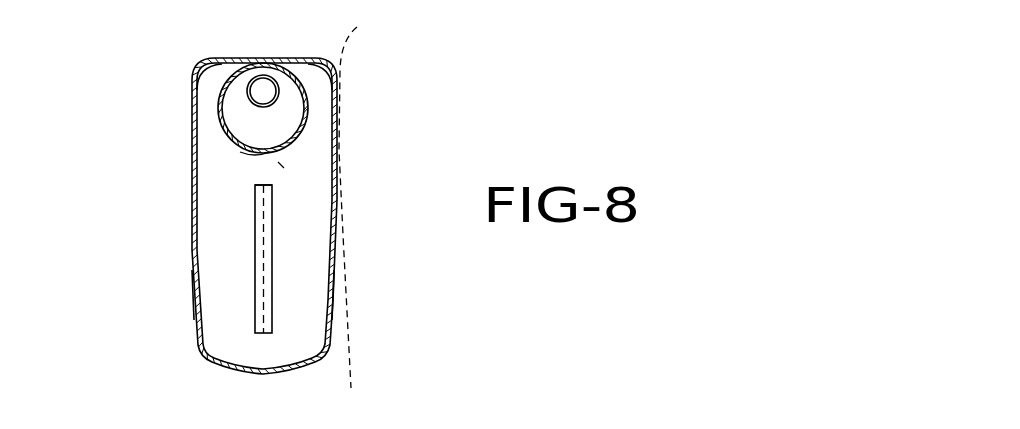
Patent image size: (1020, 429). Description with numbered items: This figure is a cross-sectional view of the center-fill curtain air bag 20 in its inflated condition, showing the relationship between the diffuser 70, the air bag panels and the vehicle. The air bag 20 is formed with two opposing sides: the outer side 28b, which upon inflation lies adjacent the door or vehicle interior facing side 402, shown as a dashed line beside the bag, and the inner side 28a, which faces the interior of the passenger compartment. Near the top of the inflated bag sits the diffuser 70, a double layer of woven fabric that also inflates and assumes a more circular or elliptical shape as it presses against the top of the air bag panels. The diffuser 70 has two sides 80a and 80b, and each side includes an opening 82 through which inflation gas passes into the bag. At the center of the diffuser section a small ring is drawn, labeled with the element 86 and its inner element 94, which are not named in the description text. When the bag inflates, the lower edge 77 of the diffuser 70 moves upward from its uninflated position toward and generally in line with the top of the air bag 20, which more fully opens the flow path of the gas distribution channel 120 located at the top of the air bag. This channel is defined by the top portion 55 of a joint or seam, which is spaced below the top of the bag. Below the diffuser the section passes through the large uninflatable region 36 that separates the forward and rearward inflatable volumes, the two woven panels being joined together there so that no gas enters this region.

The center-fill curtain air bag 20 is at (191, 257).
The diffuser 70 is at (212, 105).
The opening 82 is at (228, 133).
The side of the diffuser 80a is at (218, 80).
The side of the diffuser 80b is at (311, 82).
The boss 86 is at (253, 79).
The aperture 94 is at (279, 90).
The lower edge of the diffuser 77 is at (248, 152).
The distribution channel 120 is at (280, 164).
The uninflatable region 36 is at (272, 247).
The top portion of joint or seam 55 is at (272, 185).
The inner side 28a is at (192, 297).
The outer side 28b is at (338, 303).
The vehicle interior facing side 402 is at (357, 27).